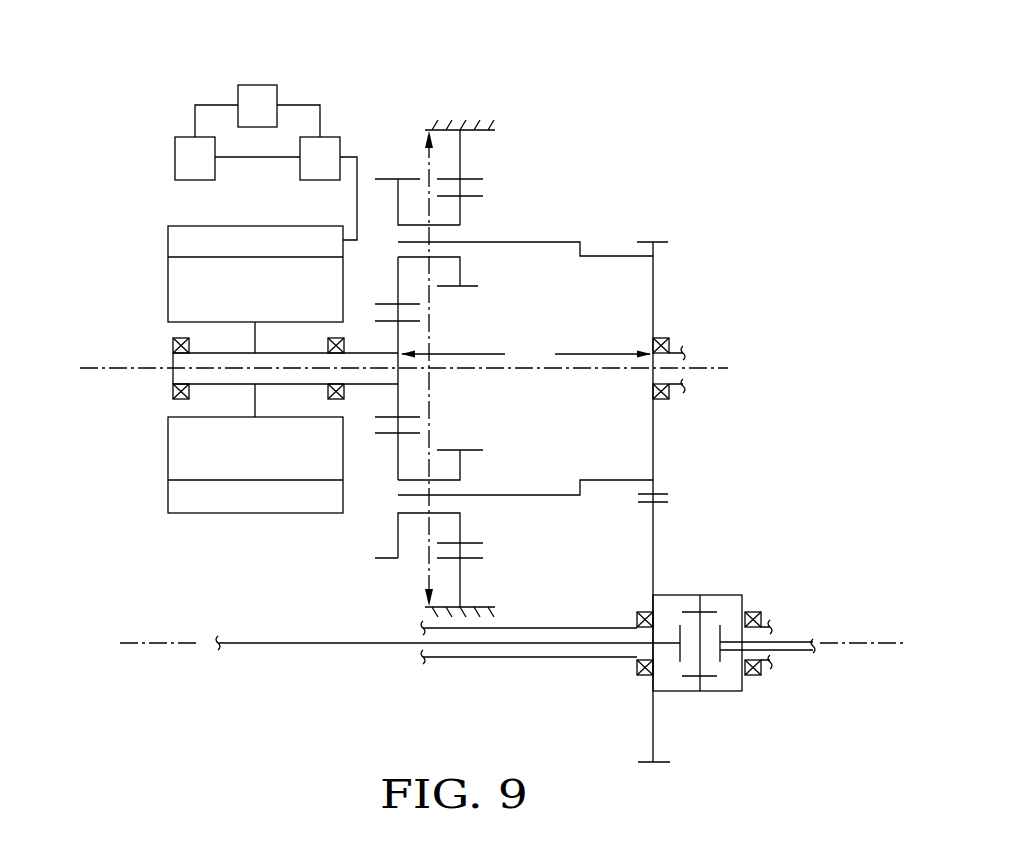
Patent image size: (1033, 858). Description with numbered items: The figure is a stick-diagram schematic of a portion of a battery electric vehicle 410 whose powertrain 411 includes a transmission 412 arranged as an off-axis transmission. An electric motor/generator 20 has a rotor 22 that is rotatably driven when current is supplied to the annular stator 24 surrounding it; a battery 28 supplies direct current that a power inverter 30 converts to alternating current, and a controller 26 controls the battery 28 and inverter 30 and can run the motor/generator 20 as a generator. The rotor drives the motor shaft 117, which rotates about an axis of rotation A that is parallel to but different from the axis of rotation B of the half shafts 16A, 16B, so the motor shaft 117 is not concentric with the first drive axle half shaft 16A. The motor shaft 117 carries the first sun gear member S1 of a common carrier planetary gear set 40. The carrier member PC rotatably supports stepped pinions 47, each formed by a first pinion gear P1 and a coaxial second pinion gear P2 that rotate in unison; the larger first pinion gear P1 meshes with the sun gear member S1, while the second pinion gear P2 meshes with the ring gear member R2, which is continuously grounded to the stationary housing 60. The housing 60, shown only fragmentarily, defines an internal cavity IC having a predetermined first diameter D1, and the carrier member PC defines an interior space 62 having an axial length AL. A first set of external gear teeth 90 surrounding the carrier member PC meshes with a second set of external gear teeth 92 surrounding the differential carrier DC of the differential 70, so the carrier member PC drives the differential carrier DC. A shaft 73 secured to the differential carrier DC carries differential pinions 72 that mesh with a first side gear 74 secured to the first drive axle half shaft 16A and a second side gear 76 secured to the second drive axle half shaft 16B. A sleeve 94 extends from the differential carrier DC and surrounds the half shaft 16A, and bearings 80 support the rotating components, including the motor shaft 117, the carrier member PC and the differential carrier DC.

The battery electric vehicle 410 is at (95, 148).
The controller 26 is at (257, 85).
The battery 28 is at (185, 137).
The power inverter 30 is at (327, 137).
The electric motor/generator 20 is at (100, 265).
The annular stator 24 is at (168, 243).
The rotor 22 is at (168, 290).
The motor shaft 117 is at (268, 351).
The bearings 80 is at (182, 400).
The common carrier planetary gear set 40 is at (355, 535).
The stationary housing 60 is at (495, 127).
The interior space 62 is at (609, 283).
The stepped pinion 47 is at (440, 258).
The powertrain 411 is at (473, 88).
The transmission 412 is at (660, 170).
The first set of external gear teeth 90 is at (662, 240).
The second set of external gear teeth 92 is at (660, 512).
The first side gear 74 is at (668, 595).
The differential pinions 72 is at (708, 600).
The second side gear 76 is at (730, 600).
The differential 70 is at (707, 710).
The shaft 73 is at (680, 665).
The sleeve 94 is at (540, 660).
The first drive axle half shaft 16A is at (338, 645).
The second drive axle half shaft 16B is at (785, 642).
The axis of rotation of the motor shaft A is at (108, 368).
The axis of rotation of the half shafts B is at (160, 643).
The first diameter D1 is at (427, 170).
The internal cavity IC is at (493, 148).
The ring gear member R2 is at (468, 176).
The carrier member PC is at (512, 242).
The first pinion gear P1 is at (400, 303).
The second pinion gear P2 is at (471, 289).
The first sun gear member S1 is at (403, 321).
The axial length AL is at (526, 354).
The differential carrier DC is at (683, 693).